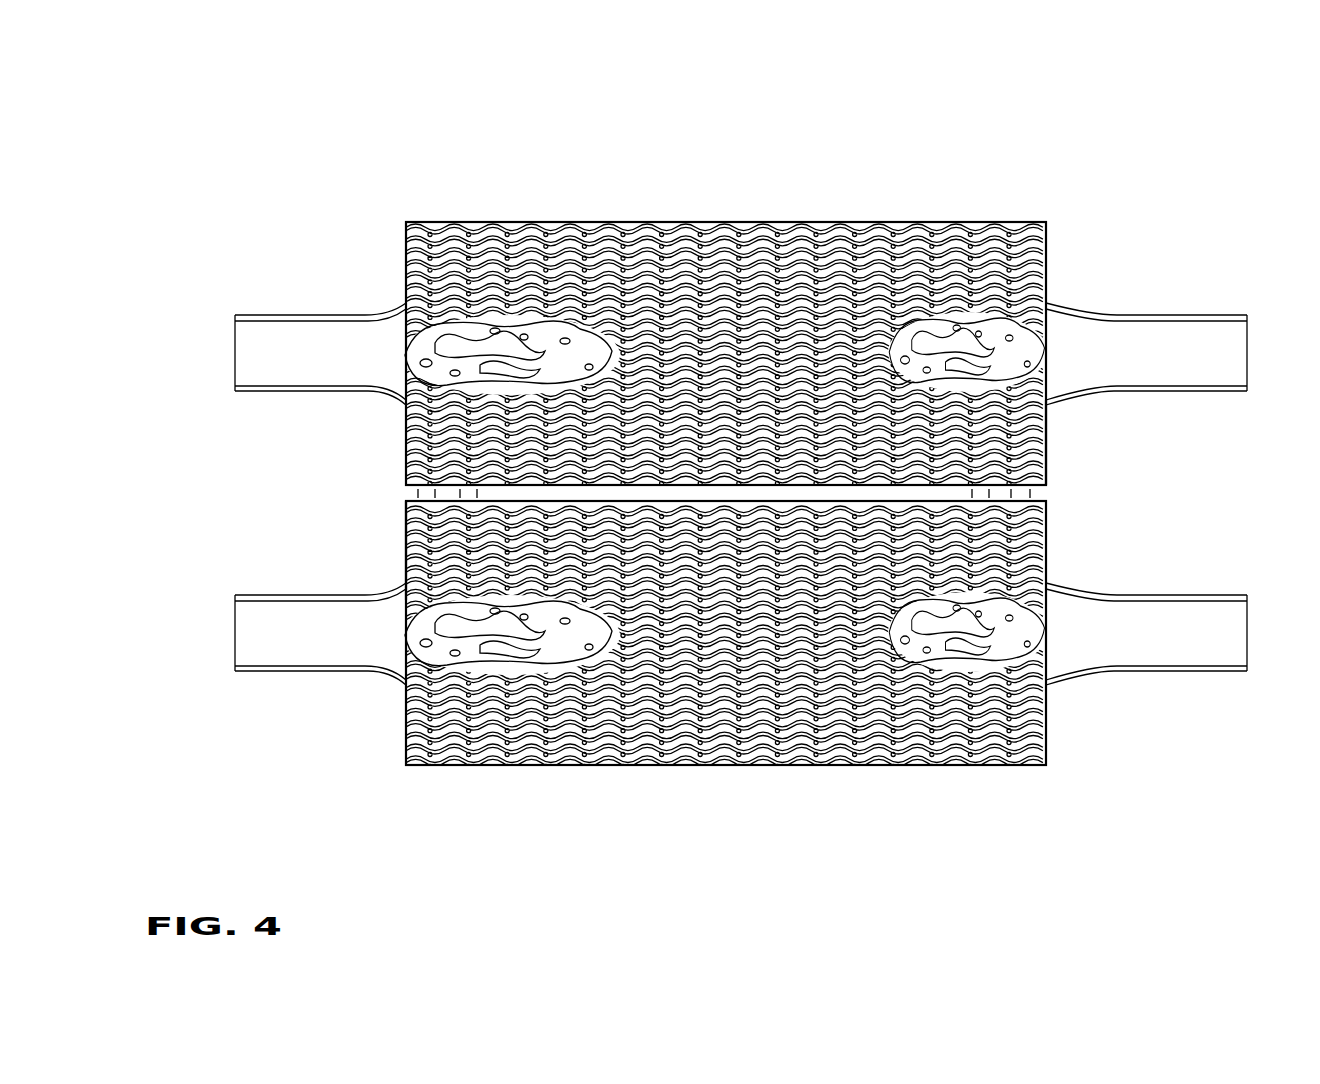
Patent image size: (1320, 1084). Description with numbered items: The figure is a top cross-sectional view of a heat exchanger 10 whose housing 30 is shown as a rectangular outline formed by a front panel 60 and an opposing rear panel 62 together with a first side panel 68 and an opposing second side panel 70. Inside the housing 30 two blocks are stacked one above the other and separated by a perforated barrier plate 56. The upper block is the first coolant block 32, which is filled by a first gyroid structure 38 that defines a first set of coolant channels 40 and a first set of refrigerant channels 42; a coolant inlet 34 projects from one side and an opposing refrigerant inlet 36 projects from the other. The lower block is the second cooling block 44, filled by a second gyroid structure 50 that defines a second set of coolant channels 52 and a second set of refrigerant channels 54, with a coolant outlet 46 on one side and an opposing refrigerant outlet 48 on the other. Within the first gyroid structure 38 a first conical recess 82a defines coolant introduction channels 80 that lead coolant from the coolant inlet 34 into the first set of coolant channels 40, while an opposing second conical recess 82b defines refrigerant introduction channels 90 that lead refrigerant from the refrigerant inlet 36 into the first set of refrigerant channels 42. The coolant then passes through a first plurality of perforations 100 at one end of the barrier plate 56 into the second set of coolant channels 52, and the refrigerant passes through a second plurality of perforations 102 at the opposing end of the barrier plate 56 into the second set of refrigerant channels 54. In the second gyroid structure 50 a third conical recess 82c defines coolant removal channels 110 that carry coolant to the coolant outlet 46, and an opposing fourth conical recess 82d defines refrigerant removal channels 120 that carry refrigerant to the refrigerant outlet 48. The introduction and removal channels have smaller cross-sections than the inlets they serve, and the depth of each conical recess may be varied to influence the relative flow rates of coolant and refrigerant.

The heat exchanger 10 is at (508, 152).
The housing 30 is at (985, 225).
The first coolant block 32 is at (564, 240).
The coolant inlet 34 is at (305, 327).
The refrigerant inlet 36 is at (1155, 340).
The first gyroid structure 38 is at (757, 248).
The first set of coolant channels 40 is at (655, 280).
The first set of refrigerant channels 42 is at (845, 252).
The second cooling block 44 is at (518, 743).
The coolant outlet 46 is at (280, 655).
The refrigerant outlet 48 is at (1173, 652).
The second gyroid structure 50 is at (587, 745).
The second set of coolant channels 52 is at (683, 712).
The second set of refrigerant channels 54 is at (748, 723).
The perforated barrier plate 56 is at (515, 490).
The front panel 60 is at (407, 550).
The rear panel 62 is at (1047, 445).
The first side panel 68 is at (631, 225).
The second side panel 70 is at (852, 767).
The coolant introduction channels 80 is at (410, 330).
The first conical recess 82a is at (494, 345).
The second conical recess 82b is at (950, 340).
The third conical recess 82c is at (492, 662).
The fourth conical recess 82d is at (980, 647).
The refrigerant introduction channels 90 is at (1040, 337).
The first plurality of perforations 100 is at (1048, 490).
The second plurality of perforations 102 is at (407, 494).
The coolant removal channels 110 is at (410, 637).
The refrigerant removal channels 120 is at (1040, 615).